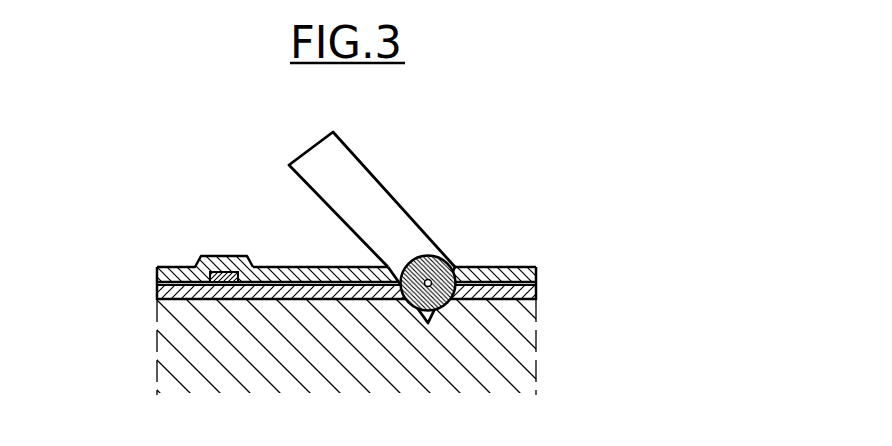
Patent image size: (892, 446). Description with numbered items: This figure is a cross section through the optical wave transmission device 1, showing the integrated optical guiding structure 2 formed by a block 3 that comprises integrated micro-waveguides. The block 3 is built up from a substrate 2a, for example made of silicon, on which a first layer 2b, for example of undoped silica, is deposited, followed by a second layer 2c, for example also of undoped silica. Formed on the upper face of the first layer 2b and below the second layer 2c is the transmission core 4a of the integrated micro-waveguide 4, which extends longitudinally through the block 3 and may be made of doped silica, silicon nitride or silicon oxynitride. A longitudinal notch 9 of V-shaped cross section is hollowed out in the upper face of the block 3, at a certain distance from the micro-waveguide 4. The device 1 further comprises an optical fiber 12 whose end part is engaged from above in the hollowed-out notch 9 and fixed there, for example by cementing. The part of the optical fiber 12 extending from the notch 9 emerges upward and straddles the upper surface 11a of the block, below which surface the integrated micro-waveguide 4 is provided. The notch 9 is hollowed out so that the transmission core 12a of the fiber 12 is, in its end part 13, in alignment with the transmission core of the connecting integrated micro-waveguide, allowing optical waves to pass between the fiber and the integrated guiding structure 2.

The optical wave transmission device 1 is at (143, 220).
The integrated optical guiding structure 2 is at (335, 296).
The substrate 2a is at (190, 345).
The first layer 2b is at (157, 293).
The second layer 2c is at (158, 277).
The block 3 is at (547, 336).
The integrated micro-waveguide 4 is at (179, 258).
The transmission core 4a is at (223, 275).
The longitudinal notch 9 is at (468, 267).
The upper surface 11a is at (278, 268).
The optical fiber 12 is at (363, 182).
The transmission core of the fiber 12a is at (428, 279).
The end part of the fiber core 13 is at (421, 256).